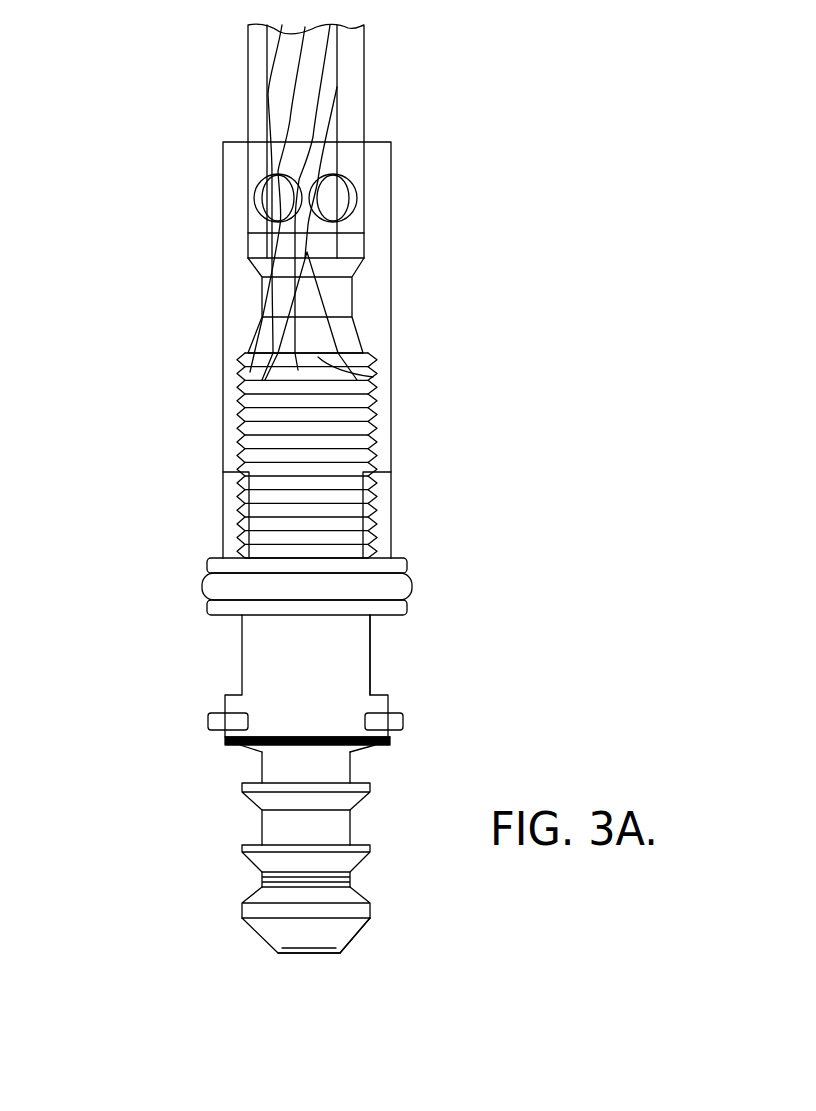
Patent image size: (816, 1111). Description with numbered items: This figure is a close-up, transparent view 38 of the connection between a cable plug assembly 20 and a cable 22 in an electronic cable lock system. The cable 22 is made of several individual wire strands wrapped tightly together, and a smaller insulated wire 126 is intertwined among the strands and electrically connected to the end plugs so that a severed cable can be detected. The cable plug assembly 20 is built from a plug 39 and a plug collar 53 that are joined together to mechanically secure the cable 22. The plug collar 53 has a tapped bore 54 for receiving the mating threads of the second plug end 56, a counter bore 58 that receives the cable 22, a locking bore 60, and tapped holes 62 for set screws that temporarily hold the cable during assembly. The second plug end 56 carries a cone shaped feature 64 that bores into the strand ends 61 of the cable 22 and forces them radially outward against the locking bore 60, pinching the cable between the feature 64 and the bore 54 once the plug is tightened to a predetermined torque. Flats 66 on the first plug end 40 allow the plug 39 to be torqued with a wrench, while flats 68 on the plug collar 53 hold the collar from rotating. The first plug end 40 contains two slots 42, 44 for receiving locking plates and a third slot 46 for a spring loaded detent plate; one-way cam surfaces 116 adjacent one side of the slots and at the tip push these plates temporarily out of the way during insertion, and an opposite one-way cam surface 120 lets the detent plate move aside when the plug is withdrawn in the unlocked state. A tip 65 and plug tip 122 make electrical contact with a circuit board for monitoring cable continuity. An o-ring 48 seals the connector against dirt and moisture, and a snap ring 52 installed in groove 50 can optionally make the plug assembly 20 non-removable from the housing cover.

The cable plug assembly 20 is at (572, 392).
The cable 22 is at (249, 97).
The transparent view 38 is at (565, 140).
The plug 39 is at (138, 645).
The first plug end 40 is at (357, 674).
The slot 42 is at (262, 762).
The slot 44 is at (265, 820).
The third slot 46 is at (263, 880).
The o-ring 48 is at (412, 588).
The groove 50 is at (230, 725).
The snap ring 52 is at (404, 720).
The plug collar 53 is at (228, 320).
The tapped bore 54 is at (240, 400).
The second plug end 56 is at (360, 440).
The counter bore 58 is at (262, 240).
The locking bore 60 is at (262, 295).
The strand ends 61 is at (358, 370).
The tapped hole 62 is at (355, 197).
The cone shaped feature 64 is at (325, 302).
The tip 65 is at (345, 938).
The flats 66 is at (372, 645).
The flats 68 is at (230, 500).
The one-way cam surface 116 is at (362, 800).
The opposite one-way cam surface 120 is at (246, 900).
The plug tip 122 is at (302, 958).
The insulated wire 126 is at (318, 106).